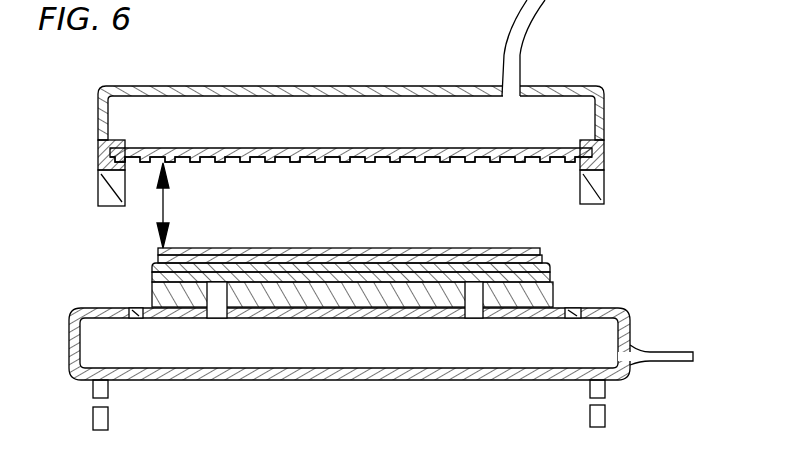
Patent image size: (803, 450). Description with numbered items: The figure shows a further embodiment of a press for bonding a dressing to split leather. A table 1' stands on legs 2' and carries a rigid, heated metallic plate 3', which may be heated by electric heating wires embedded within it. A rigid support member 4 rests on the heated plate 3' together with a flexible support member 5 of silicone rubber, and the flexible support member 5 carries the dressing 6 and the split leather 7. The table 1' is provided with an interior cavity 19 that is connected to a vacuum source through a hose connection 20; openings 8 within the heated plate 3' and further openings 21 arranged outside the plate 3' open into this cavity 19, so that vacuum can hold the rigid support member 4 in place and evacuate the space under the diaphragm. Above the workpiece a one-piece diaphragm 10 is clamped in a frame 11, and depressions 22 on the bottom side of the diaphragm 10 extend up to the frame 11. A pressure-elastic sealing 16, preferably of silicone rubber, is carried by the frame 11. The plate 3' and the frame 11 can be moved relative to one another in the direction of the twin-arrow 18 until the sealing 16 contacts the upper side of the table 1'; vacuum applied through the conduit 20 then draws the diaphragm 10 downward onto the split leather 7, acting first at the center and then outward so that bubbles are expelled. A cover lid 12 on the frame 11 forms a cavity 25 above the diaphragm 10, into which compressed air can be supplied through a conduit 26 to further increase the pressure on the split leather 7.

The table 1' is at (392, 344).
The legs 2' is at (349, 405).
The metallic plate 3' is at (432, 267).
The rigid support member 4 is at (452, 282).
The flexible support member 5 is at (510, 269).
The dressing 6 is at (390, 263).
The split leather 7 is at (332, 249).
The openings 8 is at (215, 305).
The diaphragm 10 is at (474, 157).
The frame 11 is at (100, 153).
The cover lid 12 is at (240, 91).
The pressure-elastic sealing 16 is at (100, 195).
The twin-arrow 18 is at (164, 205).
The interior cavity 19 is at (338, 352).
The hose connection 20 is at (643, 362).
The further openings 21 is at (136, 311).
The depressions 22 is at (275, 163).
The cavity 25 is at (366, 120).
The conduit 26 is at (515, 38).